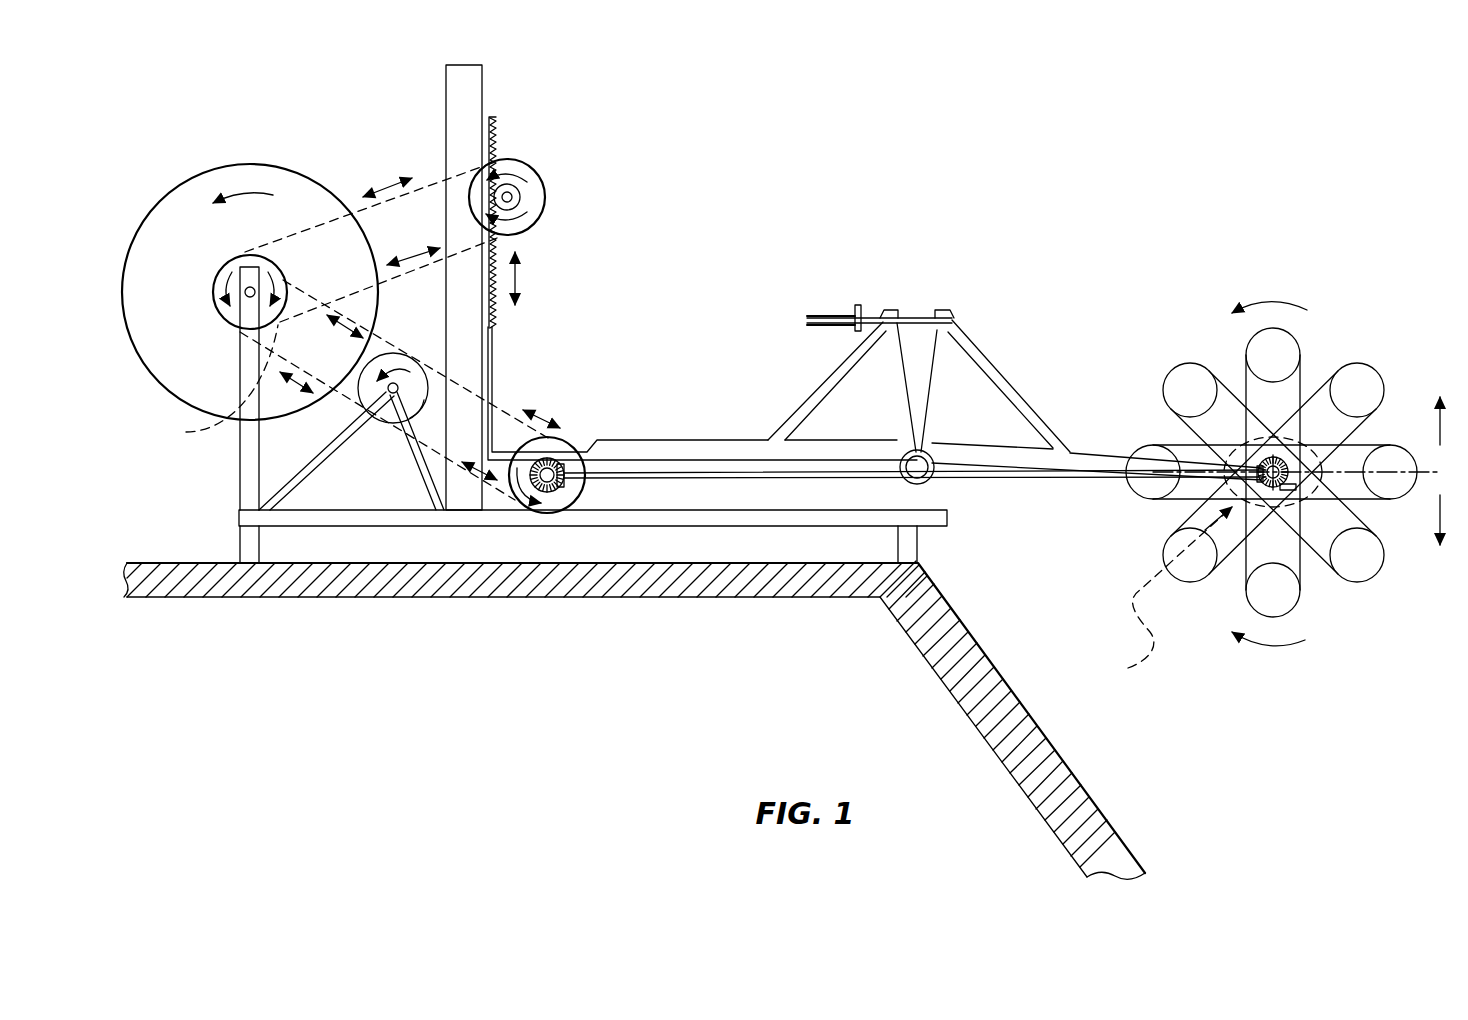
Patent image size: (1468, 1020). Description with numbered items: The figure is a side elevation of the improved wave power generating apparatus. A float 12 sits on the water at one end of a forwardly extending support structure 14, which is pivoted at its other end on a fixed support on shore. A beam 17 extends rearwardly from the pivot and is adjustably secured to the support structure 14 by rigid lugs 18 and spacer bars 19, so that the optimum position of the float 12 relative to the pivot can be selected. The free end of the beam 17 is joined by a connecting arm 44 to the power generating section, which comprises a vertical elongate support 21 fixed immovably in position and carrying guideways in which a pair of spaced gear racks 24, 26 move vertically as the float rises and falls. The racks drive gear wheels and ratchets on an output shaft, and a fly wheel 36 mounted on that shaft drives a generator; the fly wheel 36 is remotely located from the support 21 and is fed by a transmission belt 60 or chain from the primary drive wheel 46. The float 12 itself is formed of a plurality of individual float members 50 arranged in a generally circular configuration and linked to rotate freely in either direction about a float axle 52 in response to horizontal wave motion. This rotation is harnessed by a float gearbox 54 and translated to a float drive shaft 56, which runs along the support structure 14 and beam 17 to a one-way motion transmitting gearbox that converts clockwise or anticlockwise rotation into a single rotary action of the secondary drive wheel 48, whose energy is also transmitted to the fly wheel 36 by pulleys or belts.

The float 12 is at (1271, 439).
The support structure 14 is at (1018, 398).
The beam 17 is at (640, 440).
The lugs 18 is at (898, 368).
The spacer 19 is at (917, 317).
The support 21 is at (472, 85).
The rack 24 is at (570, 220).
The rack 26 is at (495, 140).
The fly wheel 36 is at (244, 174).
The connecting arm 44 is at (503, 453).
The primary drive wheel 46 is at (530, 198).
The secondary drive wheel 48 is at (553, 502).
The float members 50 is at (1185, 383).
The float axle 52 is at (1282, 489).
The float gearbox 54 is at (1165, 601).
The float drive shaft 56 is at (1003, 478).
The transmission belt 60 is at (217, 386).